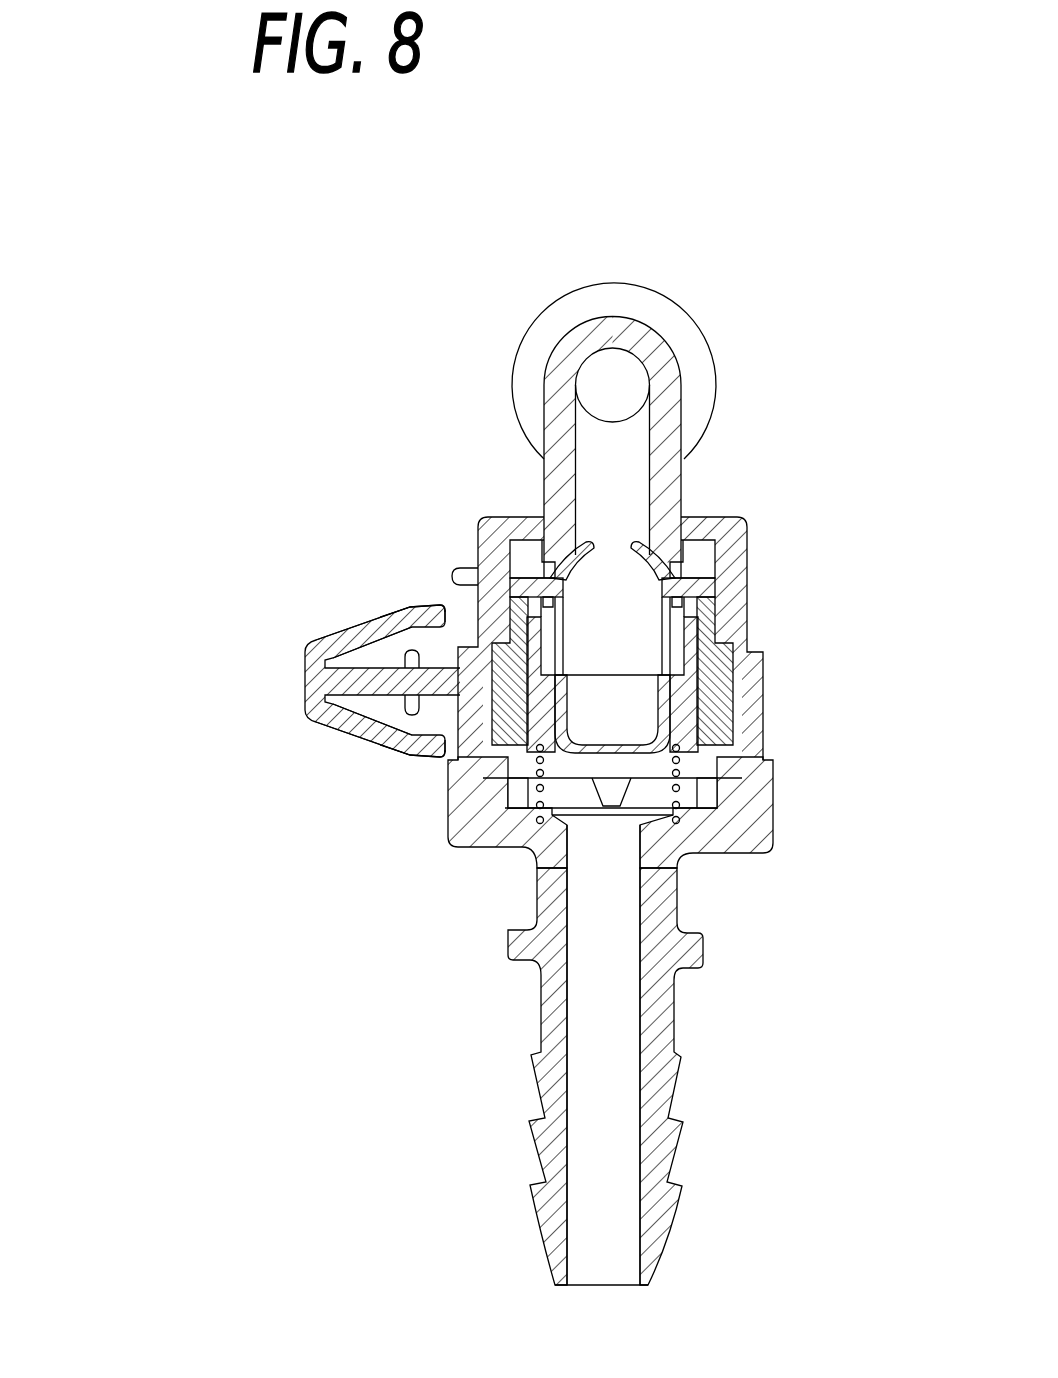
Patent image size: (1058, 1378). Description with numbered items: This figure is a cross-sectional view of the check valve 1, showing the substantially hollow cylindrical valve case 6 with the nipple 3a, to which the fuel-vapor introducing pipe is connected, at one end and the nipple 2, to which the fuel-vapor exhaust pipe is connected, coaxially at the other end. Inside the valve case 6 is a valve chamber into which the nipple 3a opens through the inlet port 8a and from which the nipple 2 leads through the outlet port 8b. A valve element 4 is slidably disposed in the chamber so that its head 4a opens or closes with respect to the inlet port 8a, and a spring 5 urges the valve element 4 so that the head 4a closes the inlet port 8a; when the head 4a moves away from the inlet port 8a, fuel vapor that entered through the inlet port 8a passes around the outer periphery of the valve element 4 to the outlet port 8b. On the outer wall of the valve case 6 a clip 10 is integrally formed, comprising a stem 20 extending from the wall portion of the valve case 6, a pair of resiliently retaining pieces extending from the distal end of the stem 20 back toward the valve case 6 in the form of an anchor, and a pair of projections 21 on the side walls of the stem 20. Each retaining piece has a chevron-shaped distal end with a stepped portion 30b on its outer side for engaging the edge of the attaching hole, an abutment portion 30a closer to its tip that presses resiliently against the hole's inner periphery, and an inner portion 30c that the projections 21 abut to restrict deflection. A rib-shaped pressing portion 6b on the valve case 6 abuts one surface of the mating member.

The check valve 1 is at (672, 733).
The nipple 2 is at (693, 950).
The nipple 3a is at (613, 283).
The valve element 4 is at (713, 680).
The head 4a is at (648, 553).
The spring 5 is at (680, 766).
The valve case 6 is at (735, 578).
The pressing portion 6b is at (467, 565).
The inlet port 8a is at (628, 442).
The outlet port 8b is at (612, 837).
The clip 10 is at (271, 656).
The stem 20 is at (303, 685).
The projection 21 is at (340, 623).
The abutment portion 30a is at (445, 603).
The stepped portion 30b is at (440, 610).
The inner portion 30c is at (390, 613).